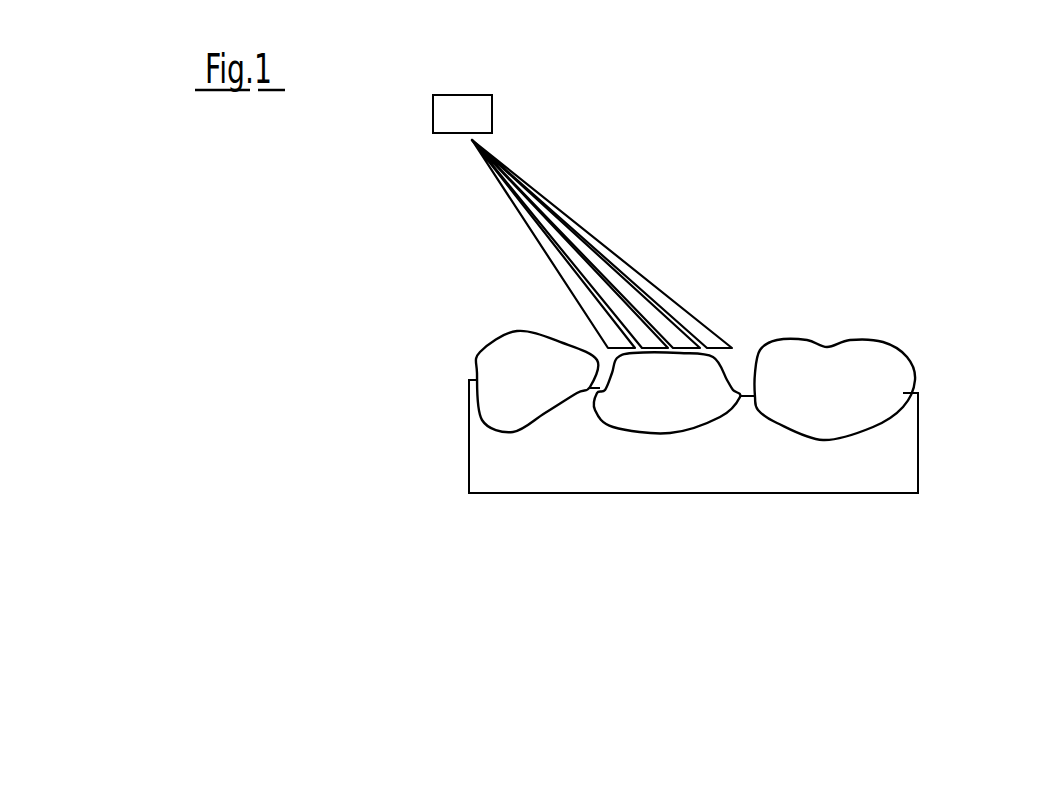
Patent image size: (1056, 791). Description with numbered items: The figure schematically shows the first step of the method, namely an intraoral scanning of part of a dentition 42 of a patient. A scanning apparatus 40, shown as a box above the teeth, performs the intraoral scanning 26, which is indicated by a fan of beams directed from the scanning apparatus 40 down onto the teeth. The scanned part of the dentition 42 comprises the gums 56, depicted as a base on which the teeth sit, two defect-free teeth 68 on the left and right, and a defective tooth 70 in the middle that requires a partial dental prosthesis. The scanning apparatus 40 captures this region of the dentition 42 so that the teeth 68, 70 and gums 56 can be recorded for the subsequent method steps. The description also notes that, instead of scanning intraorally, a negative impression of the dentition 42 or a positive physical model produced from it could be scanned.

The scanning apparatus 40 is at (462, 114).
The intraoral scanning 26 is at (583, 227).
The defect-free teeth 68 is at (525, 387).
The defective tooth 70 is at (682, 405).
The gums 56 is at (898, 465).
The dentition 42 is at (950, 362).